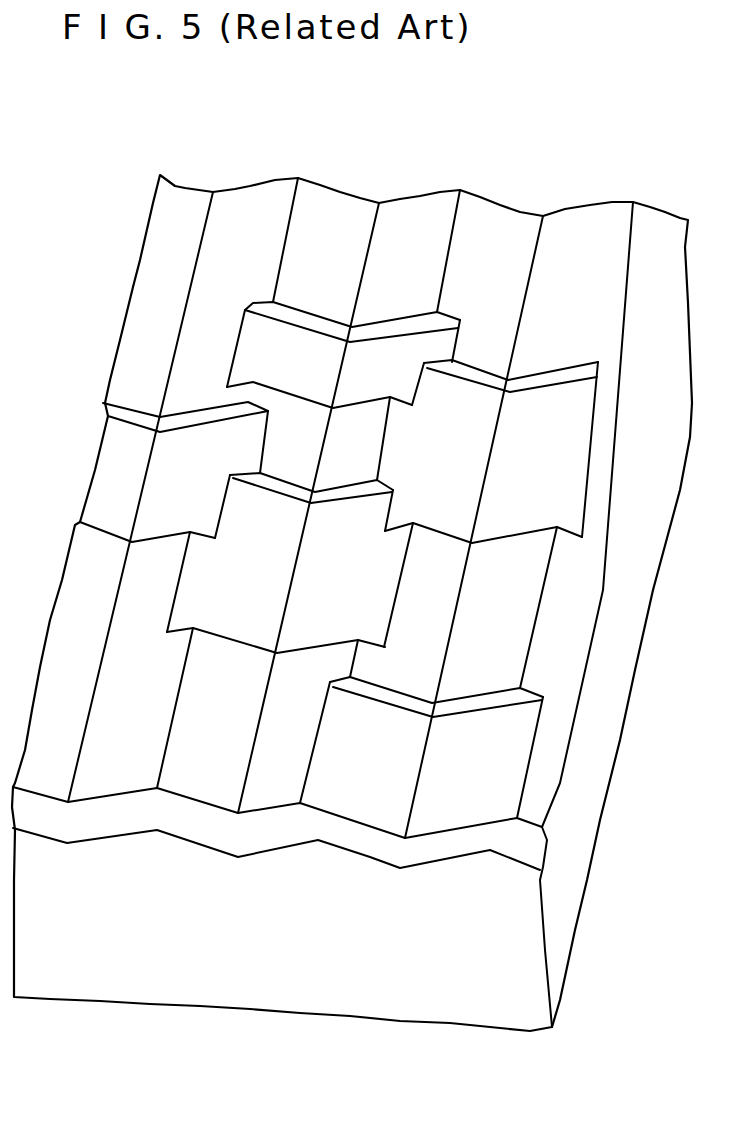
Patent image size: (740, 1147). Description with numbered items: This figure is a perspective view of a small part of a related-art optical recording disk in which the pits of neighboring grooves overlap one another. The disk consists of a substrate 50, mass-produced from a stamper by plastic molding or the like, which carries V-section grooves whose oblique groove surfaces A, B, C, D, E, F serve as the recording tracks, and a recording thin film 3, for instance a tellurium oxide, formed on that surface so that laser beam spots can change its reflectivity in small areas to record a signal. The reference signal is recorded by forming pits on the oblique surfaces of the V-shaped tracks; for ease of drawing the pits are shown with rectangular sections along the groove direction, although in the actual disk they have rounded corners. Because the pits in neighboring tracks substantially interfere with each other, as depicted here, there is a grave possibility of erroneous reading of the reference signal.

The recording thin film 3 is at (458, 840).
The substrate 50 is at (507, 923).
The oblique groove surface A is at (181, 197).
The oblique groove surface B is at (255, 198).
The oblique groove surface C is at (329, 200).
The oblique groove surface D is at (417, 214).
The oblique groove surface E is at (505, 229).
The oblique groove surface F is at (584, 224).